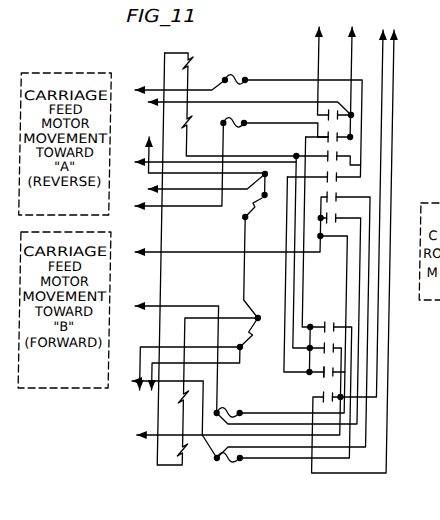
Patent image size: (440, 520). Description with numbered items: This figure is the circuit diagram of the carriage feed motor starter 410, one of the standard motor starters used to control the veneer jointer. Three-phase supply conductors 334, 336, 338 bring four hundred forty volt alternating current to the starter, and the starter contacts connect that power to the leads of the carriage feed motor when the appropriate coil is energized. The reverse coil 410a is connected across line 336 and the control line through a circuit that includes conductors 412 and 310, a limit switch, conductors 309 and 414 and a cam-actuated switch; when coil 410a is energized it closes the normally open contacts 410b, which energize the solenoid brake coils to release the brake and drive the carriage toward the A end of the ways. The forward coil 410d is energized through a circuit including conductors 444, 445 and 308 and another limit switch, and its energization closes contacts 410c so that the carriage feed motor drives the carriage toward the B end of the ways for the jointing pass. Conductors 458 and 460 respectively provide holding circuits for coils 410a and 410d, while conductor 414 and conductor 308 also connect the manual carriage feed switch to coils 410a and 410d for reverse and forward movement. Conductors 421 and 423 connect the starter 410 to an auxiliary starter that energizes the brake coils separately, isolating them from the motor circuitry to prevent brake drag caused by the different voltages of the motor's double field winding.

The conductor 308 is at (380, 42).
The conductor 309 is at (151, 105).
The conductor 310 is at (148, 149).
The voltage supply conductor 334 is at (395, 337).
The voltage supply conductor 336 is at (395, 362).
The voltage supply conductor 338 is at (395, 384).
The carriage feed motor starter 410 is at (276, 479).
The coil 410a is at (237, 199).
The contacts 410b is at (325, 118).
The contacts 410c is at (323, 378).
The coil 410d is at (245, 349).
The conductor 412 is at (163, 234).
The conductor 414 is at (349, 62).
The conductor 421 is at (150, 187).
The conductor 423 is at (155, 396).
The conductor 444 is at (138, 390).
The conductor 445 is at (140, 438).
The conductor 458 is at (316, 50).
The conductor 460 is at (393, 48).